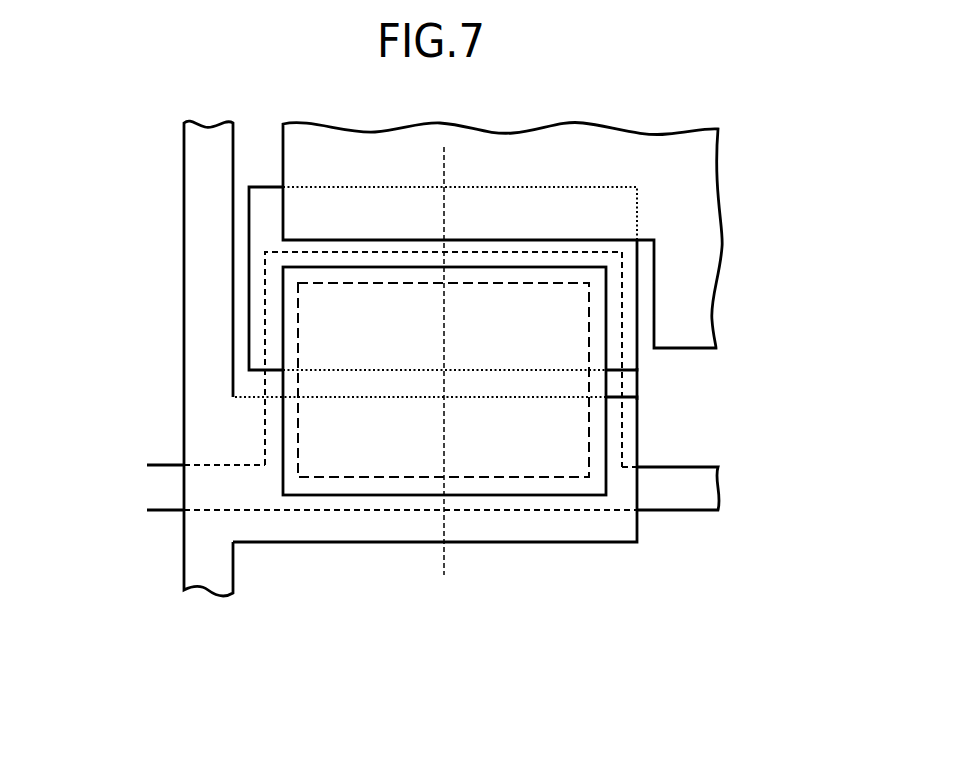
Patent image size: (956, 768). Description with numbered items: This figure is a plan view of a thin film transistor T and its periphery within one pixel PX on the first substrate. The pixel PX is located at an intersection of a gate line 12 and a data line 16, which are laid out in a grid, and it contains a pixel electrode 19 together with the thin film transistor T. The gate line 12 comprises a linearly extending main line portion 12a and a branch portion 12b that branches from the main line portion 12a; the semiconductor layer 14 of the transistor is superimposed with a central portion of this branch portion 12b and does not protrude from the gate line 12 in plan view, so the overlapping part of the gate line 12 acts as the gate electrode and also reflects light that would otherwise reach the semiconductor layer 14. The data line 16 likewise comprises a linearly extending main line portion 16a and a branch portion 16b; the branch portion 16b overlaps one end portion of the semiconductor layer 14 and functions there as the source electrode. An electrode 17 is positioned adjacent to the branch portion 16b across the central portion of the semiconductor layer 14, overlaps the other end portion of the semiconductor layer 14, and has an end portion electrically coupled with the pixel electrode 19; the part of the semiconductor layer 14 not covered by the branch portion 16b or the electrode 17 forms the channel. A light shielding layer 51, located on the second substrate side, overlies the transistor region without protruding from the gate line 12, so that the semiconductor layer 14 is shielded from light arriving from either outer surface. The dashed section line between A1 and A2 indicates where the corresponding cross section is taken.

The pixel electrode 19 is at (310, 156).
The electrode 17 is at (258, 220).
The semiconductor layer 14 is at (323, 332).
The light shielding layer 51 is at (282, 438).
The data line 16 is at (410, 411).
The main line portion 16a is at (218, 567).
The branch portion 16b is at (325, 525).
The gate line 12 is at (496, 439).
The main line portion 12a is at (674, 482).
The branch portion 12b is at (612, 383).
The section line end A1 is at (392, 575).
The section line end A2 is at (392, 147).
The pixel PX is at (738, 170).
The thin film transistor T is at (540, 512).